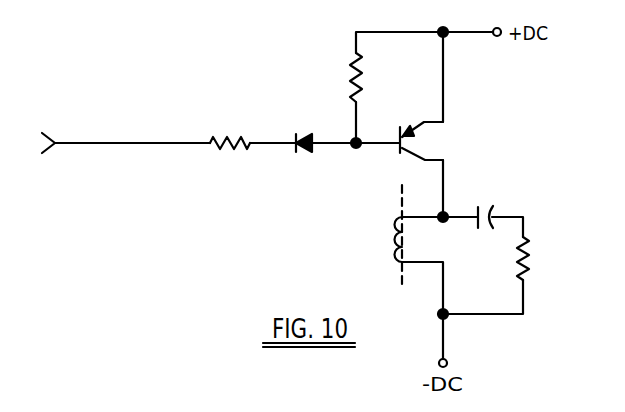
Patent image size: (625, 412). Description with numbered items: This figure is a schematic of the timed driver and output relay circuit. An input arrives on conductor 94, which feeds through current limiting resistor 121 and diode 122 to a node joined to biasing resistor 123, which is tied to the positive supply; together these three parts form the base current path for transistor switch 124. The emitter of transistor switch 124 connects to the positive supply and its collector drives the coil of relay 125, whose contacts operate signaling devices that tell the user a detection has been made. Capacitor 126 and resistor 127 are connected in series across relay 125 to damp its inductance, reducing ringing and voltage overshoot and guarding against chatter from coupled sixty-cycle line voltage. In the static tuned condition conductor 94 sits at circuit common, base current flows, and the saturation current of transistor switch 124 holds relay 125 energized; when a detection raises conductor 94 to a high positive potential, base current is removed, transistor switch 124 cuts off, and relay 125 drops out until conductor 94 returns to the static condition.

The conductor 94 is at (126, 136).
The current limiting resistor 121 is at (230, 131).
The diode 122 is at (304, 132).
The biasing resistor 123 is at (341, 77).
The transistor switch 124 is at (429, 141).
The relay 125 is at (379, 236).
The capacitor 126 is at (487, 203).
The resistor 127 is at (539, 258).